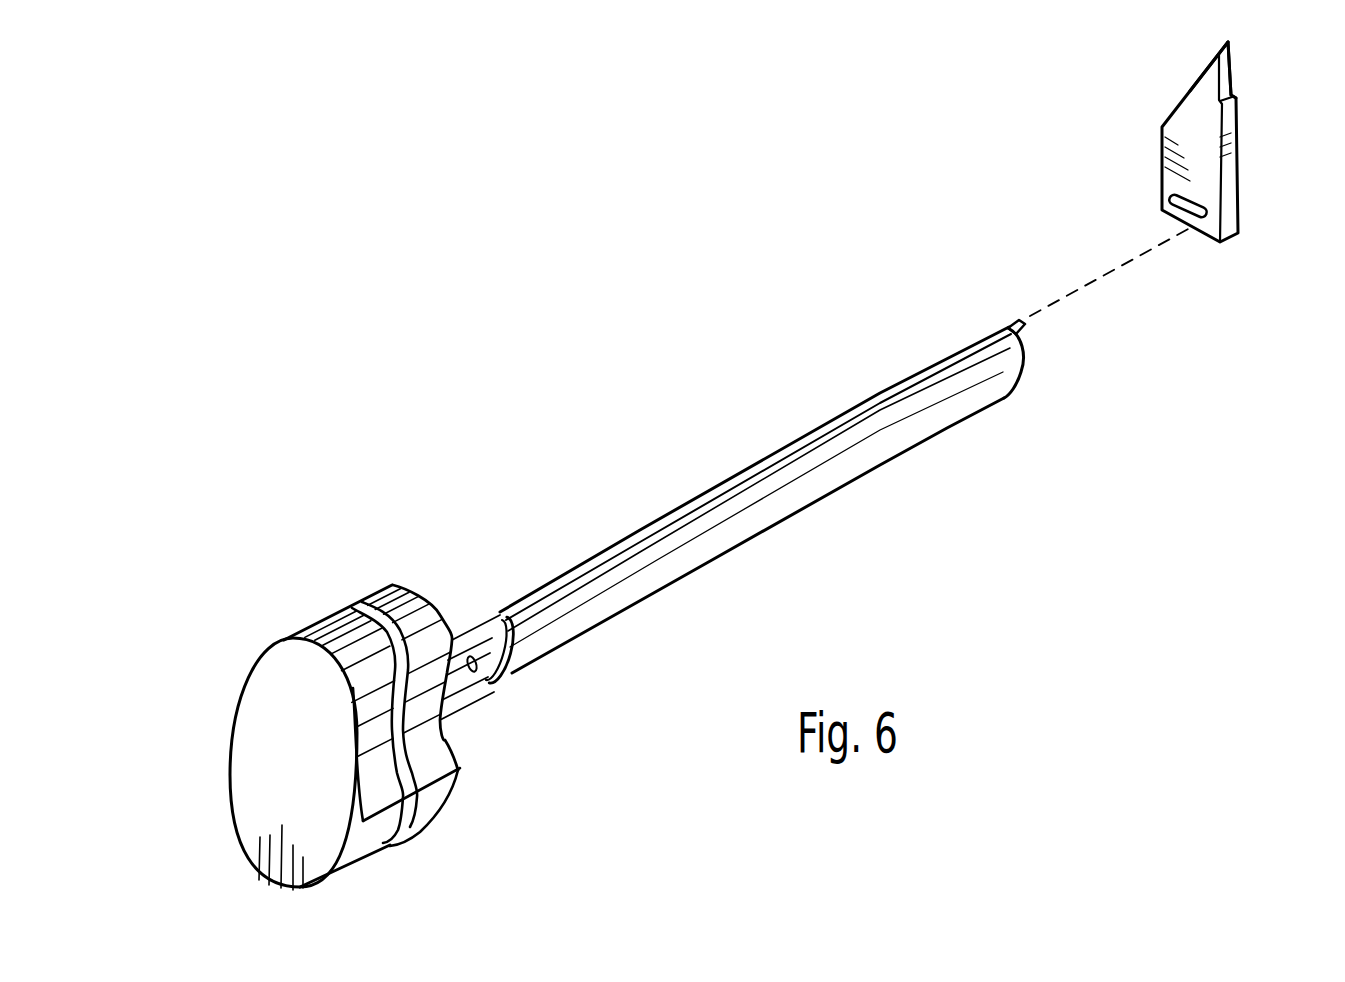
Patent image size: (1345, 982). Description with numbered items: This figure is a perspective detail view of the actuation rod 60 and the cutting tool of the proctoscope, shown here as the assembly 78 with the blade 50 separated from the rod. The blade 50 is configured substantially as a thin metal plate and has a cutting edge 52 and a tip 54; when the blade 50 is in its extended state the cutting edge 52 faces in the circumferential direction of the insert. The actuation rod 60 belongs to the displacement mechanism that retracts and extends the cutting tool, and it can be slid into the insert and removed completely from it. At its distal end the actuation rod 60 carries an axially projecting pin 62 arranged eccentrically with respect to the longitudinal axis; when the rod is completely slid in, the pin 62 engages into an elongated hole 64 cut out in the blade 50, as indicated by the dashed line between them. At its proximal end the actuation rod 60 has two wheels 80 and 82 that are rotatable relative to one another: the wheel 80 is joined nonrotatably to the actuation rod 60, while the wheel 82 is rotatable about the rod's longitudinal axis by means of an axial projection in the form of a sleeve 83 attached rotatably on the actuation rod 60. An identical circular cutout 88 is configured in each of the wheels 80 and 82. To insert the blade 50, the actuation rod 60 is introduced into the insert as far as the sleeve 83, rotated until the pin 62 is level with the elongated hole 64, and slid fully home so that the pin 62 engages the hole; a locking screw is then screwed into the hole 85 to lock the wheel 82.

The blade 50 is at (1228, 167).
The cutting edge 52 is at (1237, 96).
The tip 54 is at (1224, 43).
The actuation rod 60 is at (702, 492).
The pin 62 is at (1015, 320).
The elongated hole 64 is at (1170, 198).
The handle assembly 78 is at (233, 577).
The wheel 80 is at (307, 628).
The wheel 82 is at (377, 587).
The sleeve 83 is at (478, 627).
The hole 85 is at (477, 670).
The circular cutout 88 is at (378, 803).